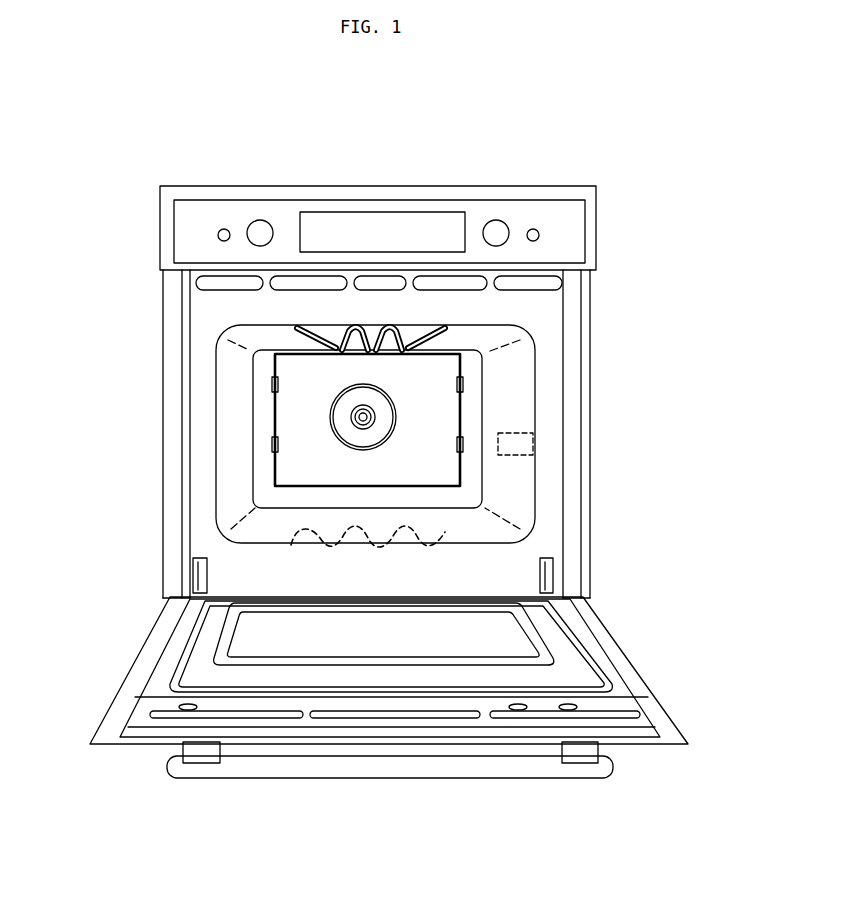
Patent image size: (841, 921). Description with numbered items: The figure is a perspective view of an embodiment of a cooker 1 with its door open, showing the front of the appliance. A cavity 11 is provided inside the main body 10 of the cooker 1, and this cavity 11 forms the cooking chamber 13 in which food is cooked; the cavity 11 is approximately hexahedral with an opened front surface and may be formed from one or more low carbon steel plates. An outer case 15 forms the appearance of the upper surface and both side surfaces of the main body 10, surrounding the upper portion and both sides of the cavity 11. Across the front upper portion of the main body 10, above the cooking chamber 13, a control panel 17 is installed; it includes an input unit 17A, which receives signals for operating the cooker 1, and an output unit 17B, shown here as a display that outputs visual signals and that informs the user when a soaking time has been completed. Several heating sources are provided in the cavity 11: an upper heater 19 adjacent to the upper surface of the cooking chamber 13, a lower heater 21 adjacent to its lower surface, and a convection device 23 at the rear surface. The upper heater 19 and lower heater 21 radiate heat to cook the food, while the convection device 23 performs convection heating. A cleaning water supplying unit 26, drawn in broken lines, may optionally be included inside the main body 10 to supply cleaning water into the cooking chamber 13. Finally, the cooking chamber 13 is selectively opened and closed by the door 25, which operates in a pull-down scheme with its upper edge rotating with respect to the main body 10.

The cooker 1 is at (117, 158).
The main body 10 is at (628, 378).
The cavity 11 is at (583, 453).
The cooking chamber 13 is at (246, 471).
The outer case 15 is at (166, 453).
The control panel 17 is at (585, 231).
The input unit 17A is at (500, 230).
The output unit 17B is at (409, 222).
The upper heater 19 is at (458, 344).
The lower heater 21 is at (450, 531).
The convection device 23 is at (323, 418).
The door 25 is at (125, 671).
The cleaning water supplying unit 26 is at (520, 433).